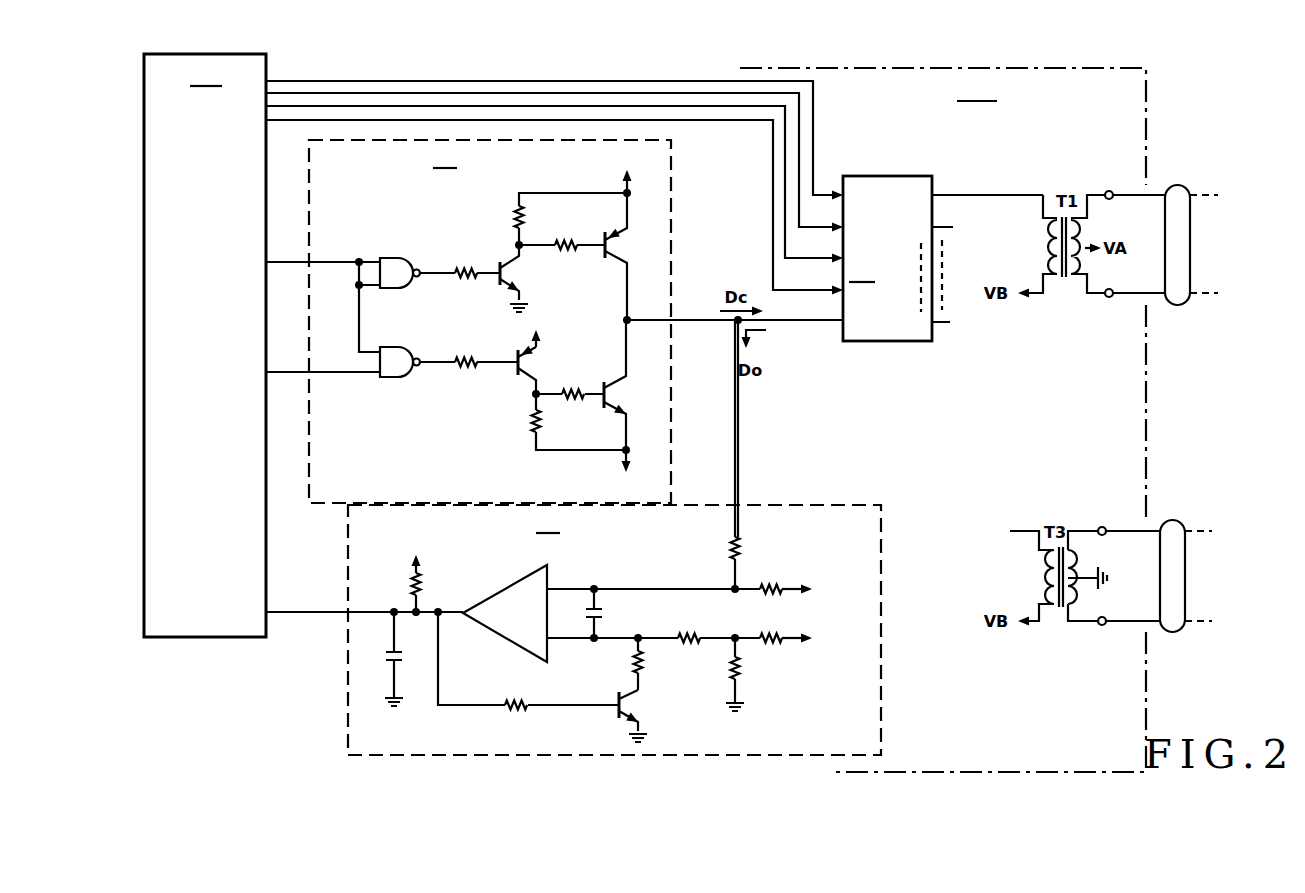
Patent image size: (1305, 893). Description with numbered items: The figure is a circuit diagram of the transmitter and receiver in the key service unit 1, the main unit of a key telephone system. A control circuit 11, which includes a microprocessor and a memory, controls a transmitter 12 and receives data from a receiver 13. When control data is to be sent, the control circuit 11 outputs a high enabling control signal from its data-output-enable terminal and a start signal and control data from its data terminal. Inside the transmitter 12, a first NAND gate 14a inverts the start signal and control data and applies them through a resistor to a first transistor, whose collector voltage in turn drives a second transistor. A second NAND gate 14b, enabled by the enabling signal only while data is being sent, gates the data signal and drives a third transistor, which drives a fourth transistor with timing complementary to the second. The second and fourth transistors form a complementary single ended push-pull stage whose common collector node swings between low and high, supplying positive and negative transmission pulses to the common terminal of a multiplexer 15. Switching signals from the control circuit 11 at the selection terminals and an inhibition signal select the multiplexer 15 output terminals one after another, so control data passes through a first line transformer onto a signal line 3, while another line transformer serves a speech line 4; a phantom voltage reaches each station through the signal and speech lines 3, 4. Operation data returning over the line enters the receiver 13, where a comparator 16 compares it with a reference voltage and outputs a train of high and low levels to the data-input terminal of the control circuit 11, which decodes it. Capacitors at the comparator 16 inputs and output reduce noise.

The KSU 1 is at (1146, 88).
The signal line 3 is at (1190, 185).
The speech line 4 is at (1181, 520).
The control circuit 11 is at (266, 576).
The transmitter 12 is at (671, 172).
The receiver 13 is at (838, 505).
The NAND gate 14a is at (400, 258).
The NAND gate 14b is at (400, 347).
The multiplexer 15 is at (935, 179).
The comparator 16 is at (518, 582).